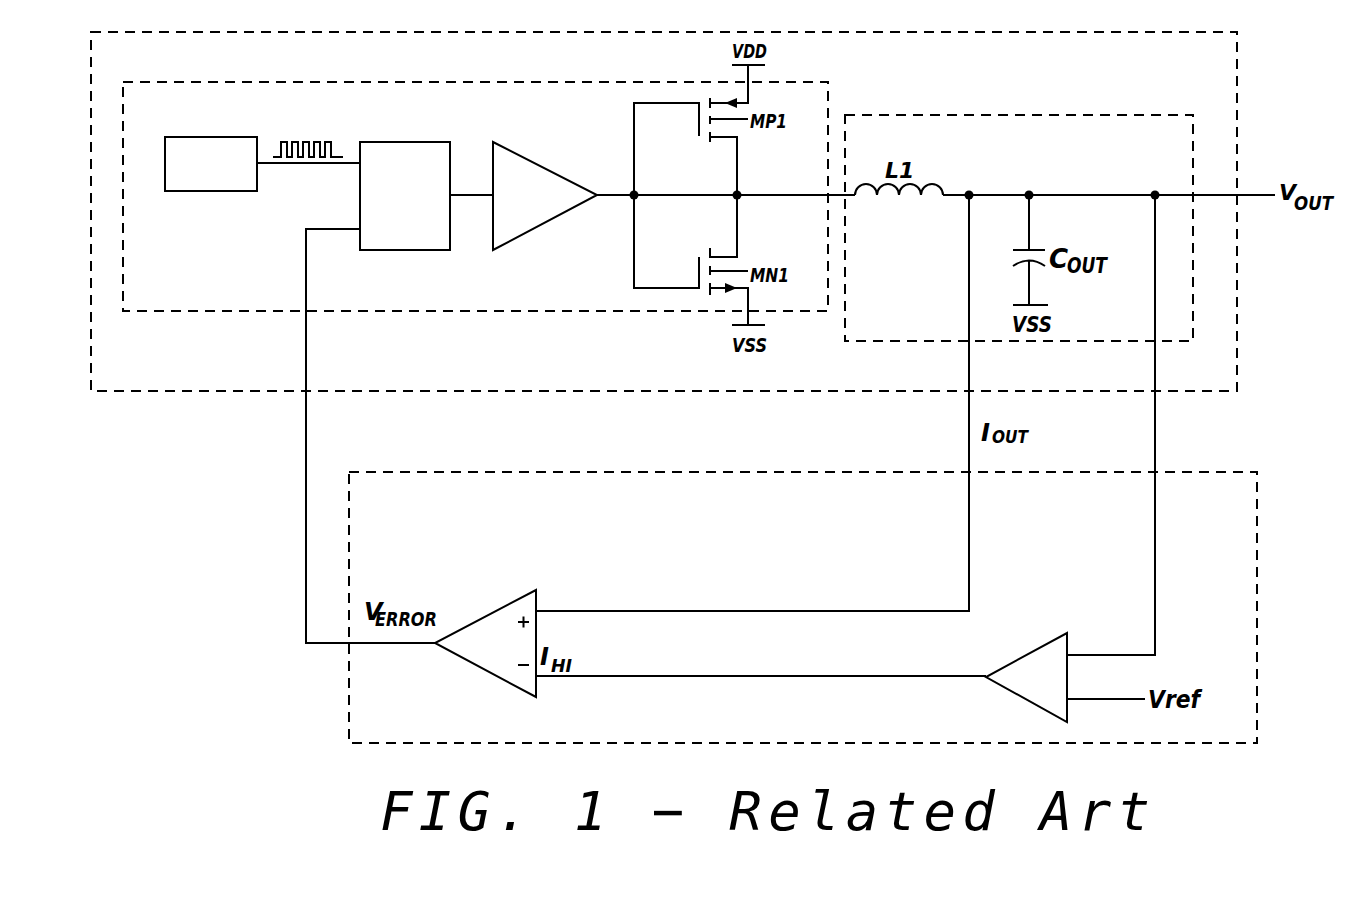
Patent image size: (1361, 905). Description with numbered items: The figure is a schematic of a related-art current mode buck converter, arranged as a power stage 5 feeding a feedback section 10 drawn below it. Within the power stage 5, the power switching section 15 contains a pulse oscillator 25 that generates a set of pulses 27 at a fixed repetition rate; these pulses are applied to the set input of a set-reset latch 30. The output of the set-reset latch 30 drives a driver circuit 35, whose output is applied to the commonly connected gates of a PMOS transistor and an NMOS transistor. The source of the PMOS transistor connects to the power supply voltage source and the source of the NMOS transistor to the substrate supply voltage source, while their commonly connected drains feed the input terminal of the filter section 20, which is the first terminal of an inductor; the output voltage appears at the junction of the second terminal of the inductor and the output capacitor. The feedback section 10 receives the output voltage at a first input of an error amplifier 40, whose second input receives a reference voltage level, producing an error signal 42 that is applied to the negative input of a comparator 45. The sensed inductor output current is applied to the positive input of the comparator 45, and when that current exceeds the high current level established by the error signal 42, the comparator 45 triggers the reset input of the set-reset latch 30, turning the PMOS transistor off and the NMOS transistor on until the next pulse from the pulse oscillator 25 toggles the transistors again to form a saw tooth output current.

The power stage 5 is at (1237, 60).
The feedback section 10 is at (1187, 472).
The power switching section 15 is at (826, 84).
The filter section 20 is at (1148, 115).
The pulse oscillator 25 is at (193, 137).
The set of pulses 27 is at (295, 133).
The set-reset latch 30 is at (382, 142).
The driver circuit 35 is at (543, 163).
The error amplifier 40 is at (1017, 657).
The error signal 42 is at (819, 676).
The comparator 45 is at (487, 613).